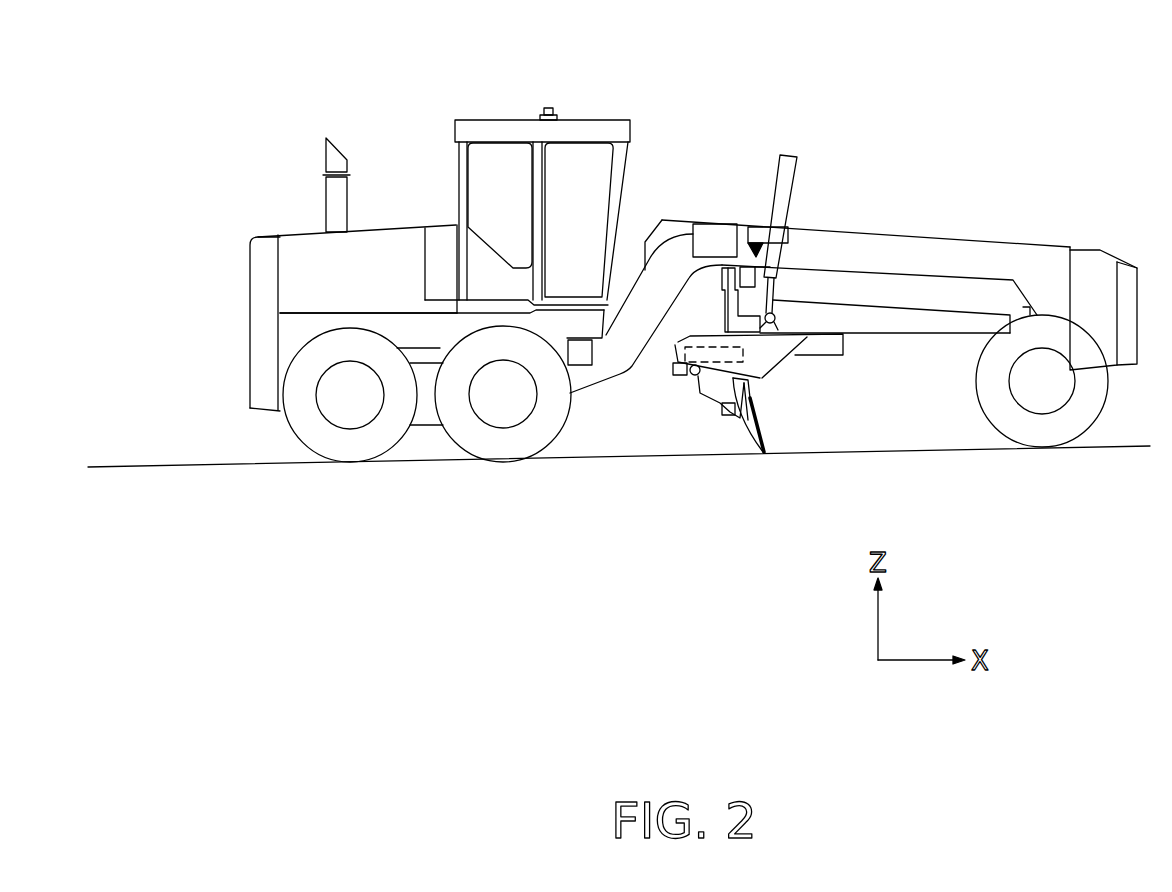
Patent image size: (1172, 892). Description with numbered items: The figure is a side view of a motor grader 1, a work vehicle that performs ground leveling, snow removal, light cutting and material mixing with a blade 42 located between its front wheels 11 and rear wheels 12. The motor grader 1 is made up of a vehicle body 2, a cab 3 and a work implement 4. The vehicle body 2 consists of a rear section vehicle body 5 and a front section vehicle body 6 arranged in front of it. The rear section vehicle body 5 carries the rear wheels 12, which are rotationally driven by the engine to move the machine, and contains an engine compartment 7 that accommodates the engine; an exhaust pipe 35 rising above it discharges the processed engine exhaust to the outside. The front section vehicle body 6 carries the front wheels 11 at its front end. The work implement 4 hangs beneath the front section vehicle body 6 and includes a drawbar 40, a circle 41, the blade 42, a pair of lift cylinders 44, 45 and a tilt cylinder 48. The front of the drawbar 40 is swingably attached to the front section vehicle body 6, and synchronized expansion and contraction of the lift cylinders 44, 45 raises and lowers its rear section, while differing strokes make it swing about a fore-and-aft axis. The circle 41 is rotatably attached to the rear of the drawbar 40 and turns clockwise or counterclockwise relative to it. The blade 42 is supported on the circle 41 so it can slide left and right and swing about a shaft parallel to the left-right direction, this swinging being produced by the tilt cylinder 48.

The motor grader 1 is at (898, 98).
The vehicle body 2 is at (673, 192).
The cab 3 is at (485, 122).
The work implement 4 is at (815, 430).
The rear section vehicle body 5 is at (387, 203).
The front section vehicle body 6 is at (918, 222).
The engine compartment 7 is at (308, 250).
The front wheels 11 is at (1048, 438).
The rear wheels 12 is at (352, 452).
The exhaust pipe 35 is at (335, 153).
The drawbar 40 is at (936, 333).
The circle 41 is at (842, 343).
The blade 42 is at (750, 423).
The lift cylinder 44 is at (788, 189).
The lift cylinder 45 is at (783, 175).
The tilt cylinder 48 is at (720, 366).